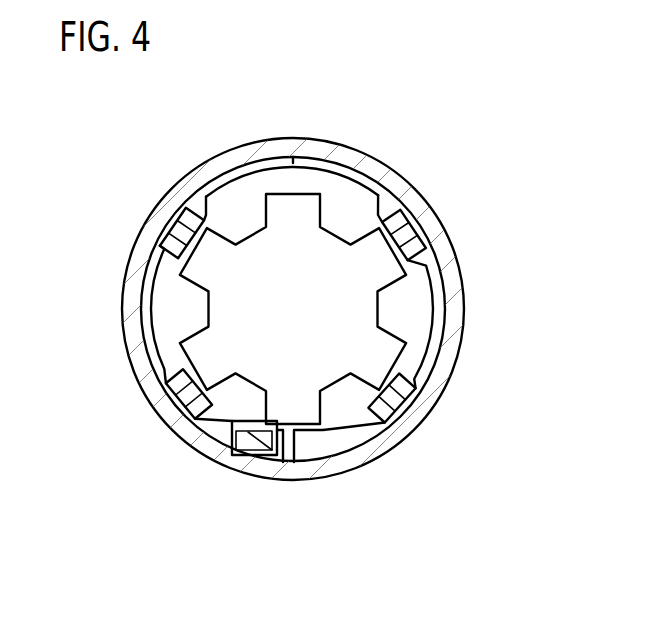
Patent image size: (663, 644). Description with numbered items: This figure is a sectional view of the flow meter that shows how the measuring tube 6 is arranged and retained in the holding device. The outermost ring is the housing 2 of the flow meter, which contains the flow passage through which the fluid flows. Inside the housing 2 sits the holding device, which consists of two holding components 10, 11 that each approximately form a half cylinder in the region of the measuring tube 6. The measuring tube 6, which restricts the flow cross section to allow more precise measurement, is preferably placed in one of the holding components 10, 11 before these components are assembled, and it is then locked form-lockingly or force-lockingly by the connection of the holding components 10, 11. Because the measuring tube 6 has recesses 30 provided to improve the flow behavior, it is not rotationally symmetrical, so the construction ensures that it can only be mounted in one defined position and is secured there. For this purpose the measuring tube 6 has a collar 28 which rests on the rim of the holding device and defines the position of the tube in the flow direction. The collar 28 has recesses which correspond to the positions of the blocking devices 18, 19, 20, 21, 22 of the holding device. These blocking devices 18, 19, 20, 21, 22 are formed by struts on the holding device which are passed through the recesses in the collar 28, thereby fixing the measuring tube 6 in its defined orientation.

The housing 2 is at (373, 462).
The measuring tube 6 is at (332, 250).
The holding component 10 is at (199, 203).
The holding component 11 is at (390, 203).
The blocking device 18 is at (400, 240).
The blocking device 19 is at (390, 397).
The blocking device 20 is at (248, 440).
The blocking device 21 is at (178, 238).
The blocking device 22 is at (188, 388).
The collar 28 is at (417, 327).
The recesses 30 is at (397, 292).